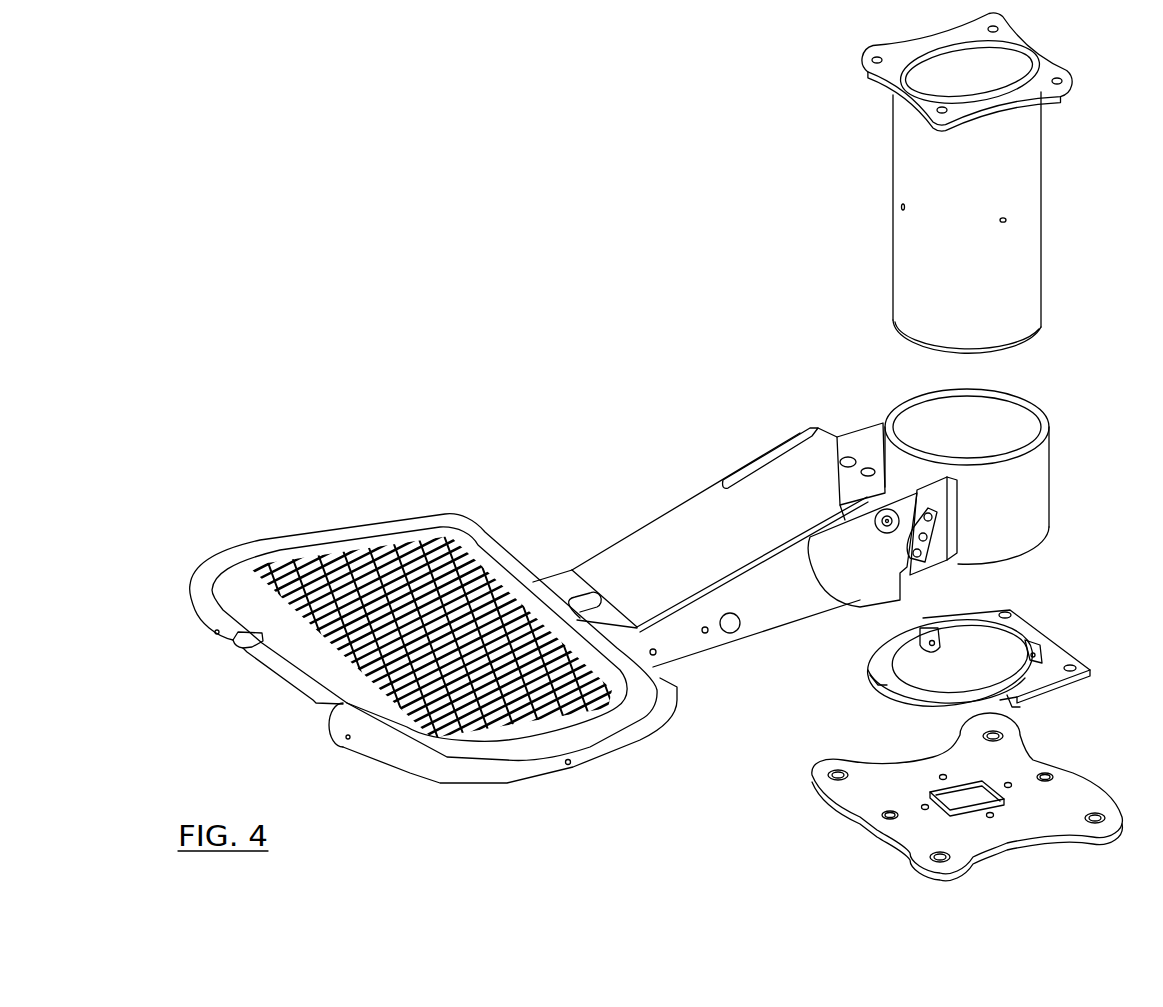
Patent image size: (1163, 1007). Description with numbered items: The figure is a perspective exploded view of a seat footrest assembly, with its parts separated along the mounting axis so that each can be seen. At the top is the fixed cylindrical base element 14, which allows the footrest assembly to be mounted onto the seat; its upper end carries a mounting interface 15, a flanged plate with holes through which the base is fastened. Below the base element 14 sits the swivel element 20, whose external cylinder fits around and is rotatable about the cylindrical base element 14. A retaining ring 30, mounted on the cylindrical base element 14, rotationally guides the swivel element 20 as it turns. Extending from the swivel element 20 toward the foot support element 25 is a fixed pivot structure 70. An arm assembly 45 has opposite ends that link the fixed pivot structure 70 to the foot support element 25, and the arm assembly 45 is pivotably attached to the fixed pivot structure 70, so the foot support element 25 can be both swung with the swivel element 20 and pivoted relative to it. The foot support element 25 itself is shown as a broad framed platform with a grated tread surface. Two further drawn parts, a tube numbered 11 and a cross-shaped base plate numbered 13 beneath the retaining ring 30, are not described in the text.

The post 11 is at (976, 183).
The base plate 13 is at (1067, 803).
The cylindrical base element 14 is at (1015, 302).
The mounting interface 15 is at (998, 29).
The swivel element 20 is at (1035, 488).
The foot support element 25 is at (370, 533).
The retaining ring 30 is at (1053, 650).
The arm assembly 45 is at (678, 530).
The fixed pivot structure 70 is at (937, 555).